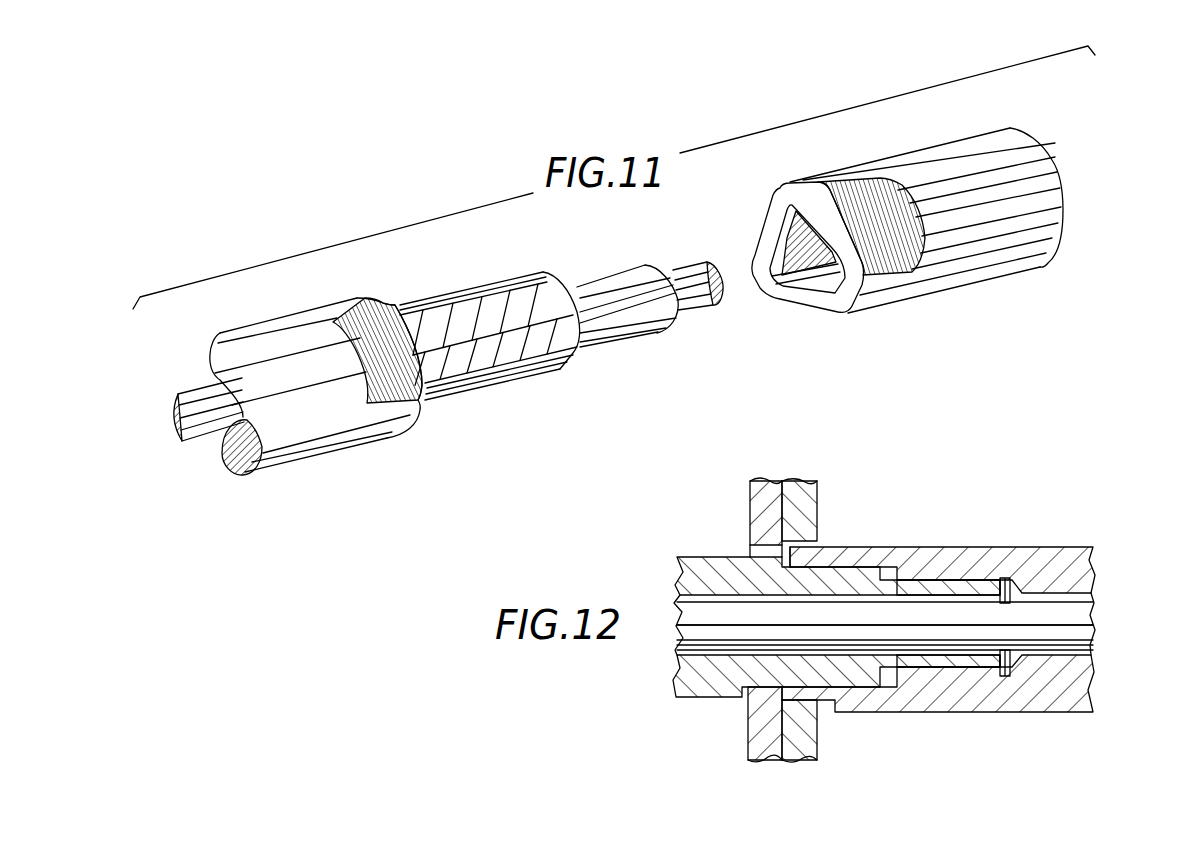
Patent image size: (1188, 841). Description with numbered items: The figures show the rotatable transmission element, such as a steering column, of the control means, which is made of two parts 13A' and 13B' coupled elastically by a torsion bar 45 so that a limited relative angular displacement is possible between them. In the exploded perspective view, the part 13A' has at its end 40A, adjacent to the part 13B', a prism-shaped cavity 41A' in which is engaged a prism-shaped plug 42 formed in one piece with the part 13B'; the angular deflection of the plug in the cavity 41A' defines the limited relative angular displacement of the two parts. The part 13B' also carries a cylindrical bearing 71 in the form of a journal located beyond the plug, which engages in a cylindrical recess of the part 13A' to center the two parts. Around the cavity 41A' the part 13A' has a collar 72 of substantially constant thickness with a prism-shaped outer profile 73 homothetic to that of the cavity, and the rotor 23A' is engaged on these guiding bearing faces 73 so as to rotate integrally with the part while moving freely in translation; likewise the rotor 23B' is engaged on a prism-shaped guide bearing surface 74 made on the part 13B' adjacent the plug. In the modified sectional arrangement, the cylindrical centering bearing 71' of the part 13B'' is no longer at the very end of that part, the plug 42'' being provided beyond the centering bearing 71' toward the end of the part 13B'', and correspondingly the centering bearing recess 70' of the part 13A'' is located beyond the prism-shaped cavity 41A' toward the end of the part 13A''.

In FIG. 11, the part 13B' is at (298, 411).
In FIG. 11, the prism-shaped guide bearing surface 74 is at (380, 327).
In FIG. 11, the prism-shaped plug 42 is at (490, 319).
In FIG. 11, the cylindrical bearing 71 is at (627, 289).
In FIG. 11, the torsion bar 45 is at (688, 276).
In FIG. 11, the part 13A' is at (926, 232).
In FIG. 11, the end 40A is at (826, 182).
In FIG. 11, the prism-shaped outer profile 73 is at (768, 227).
In FIG. 11, the prism-shaped cavity 41A' is at (786, 236).
In FIG. 12, the prism-shaped cavity 41A' is at (1005, 592).
In FIG. 11, the collar 72 is at (814, 303).
In FIG. 12, the part 13B'' is at (854, 604).
In FIG. 12, the plug 42'' is at (948, 588).
In FIG. 12, the part 13A'' is at (964, 601).
In FIG. 12, the rotor 23B' is at (737, 612).
In FIG. 12, the rotor 23A' is at (837, 612).
In FIG. 12, the centering bearing recess 70' is at (835, 539).
In FIG. 12, the cylindrical centering bearing 71' is at (885, 596).